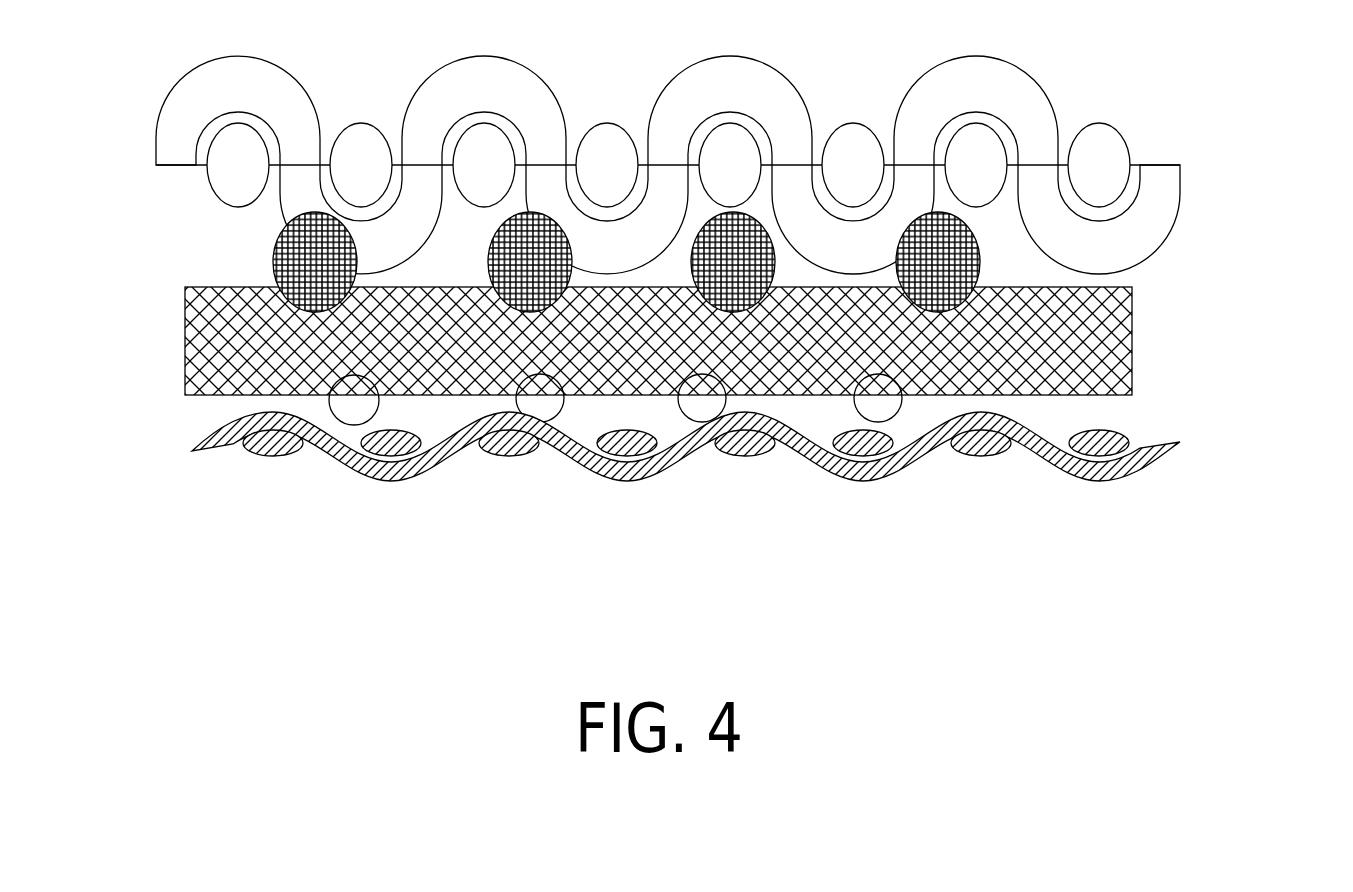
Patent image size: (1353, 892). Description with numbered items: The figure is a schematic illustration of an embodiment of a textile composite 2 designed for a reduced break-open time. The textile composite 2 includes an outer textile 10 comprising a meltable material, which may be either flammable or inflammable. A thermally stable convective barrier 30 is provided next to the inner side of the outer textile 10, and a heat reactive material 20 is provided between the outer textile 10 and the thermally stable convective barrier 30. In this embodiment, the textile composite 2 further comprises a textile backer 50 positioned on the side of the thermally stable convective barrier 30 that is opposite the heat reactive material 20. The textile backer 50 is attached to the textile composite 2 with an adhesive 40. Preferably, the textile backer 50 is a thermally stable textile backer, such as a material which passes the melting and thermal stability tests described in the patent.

The textile composite 2 is at (120, 55).
The outer textile 10 is at (1180, 180).
The heat reactive material 20 is at (978, 247).
The thermally stable convective barrier 30 is at (1132, 322).
The adhesive 40 is at (700, 405).
The textile backer 50 is at (1117, 478).